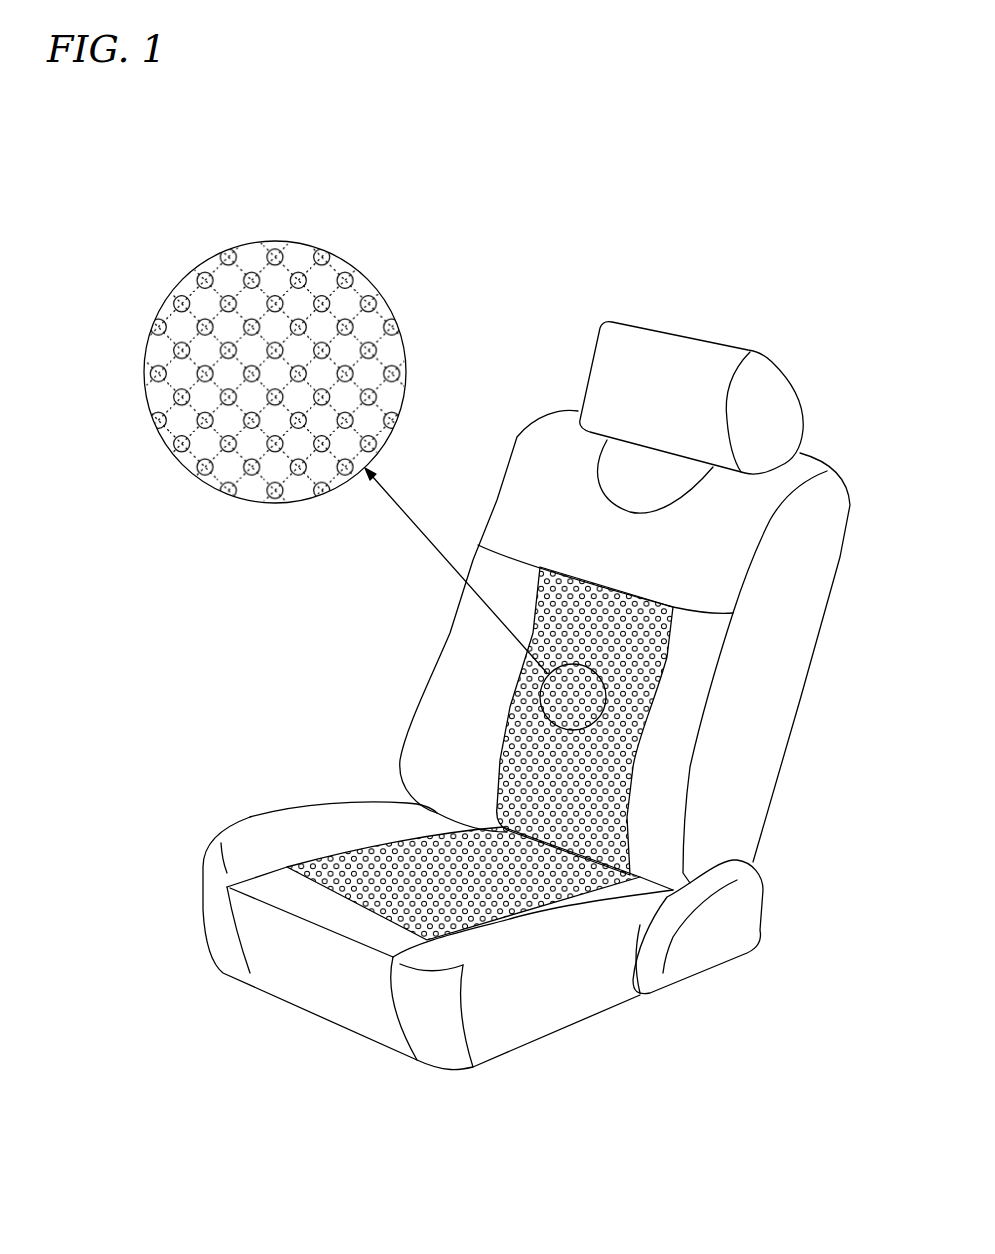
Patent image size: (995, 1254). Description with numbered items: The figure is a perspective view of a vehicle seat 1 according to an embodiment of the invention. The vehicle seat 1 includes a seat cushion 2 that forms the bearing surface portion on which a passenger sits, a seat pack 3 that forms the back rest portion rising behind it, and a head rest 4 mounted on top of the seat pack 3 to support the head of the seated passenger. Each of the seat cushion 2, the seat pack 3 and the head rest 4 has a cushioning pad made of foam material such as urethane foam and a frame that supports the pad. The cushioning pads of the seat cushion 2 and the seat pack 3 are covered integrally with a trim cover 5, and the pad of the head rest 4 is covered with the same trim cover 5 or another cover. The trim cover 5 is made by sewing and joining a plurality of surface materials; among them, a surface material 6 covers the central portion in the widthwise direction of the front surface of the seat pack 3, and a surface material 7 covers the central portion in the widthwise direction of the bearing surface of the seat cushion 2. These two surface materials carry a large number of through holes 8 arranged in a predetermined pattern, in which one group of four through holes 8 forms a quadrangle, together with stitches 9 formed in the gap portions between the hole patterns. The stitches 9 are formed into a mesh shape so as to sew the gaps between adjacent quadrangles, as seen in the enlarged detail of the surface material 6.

The vehicle seat 1 is at (725, 223).
The seat cushion 2 is at (421, 862).
The seat pack 3 is at (604, 671).
The head rest 4 is at (603, 330).
The trim cover 5 is at (260, 413).
The surface material 6 is at (507, 703).
The surface material 7 is at (397, 853).
The through holes 8 is at (275, 250).
The stitches 9 is at (248, 303).